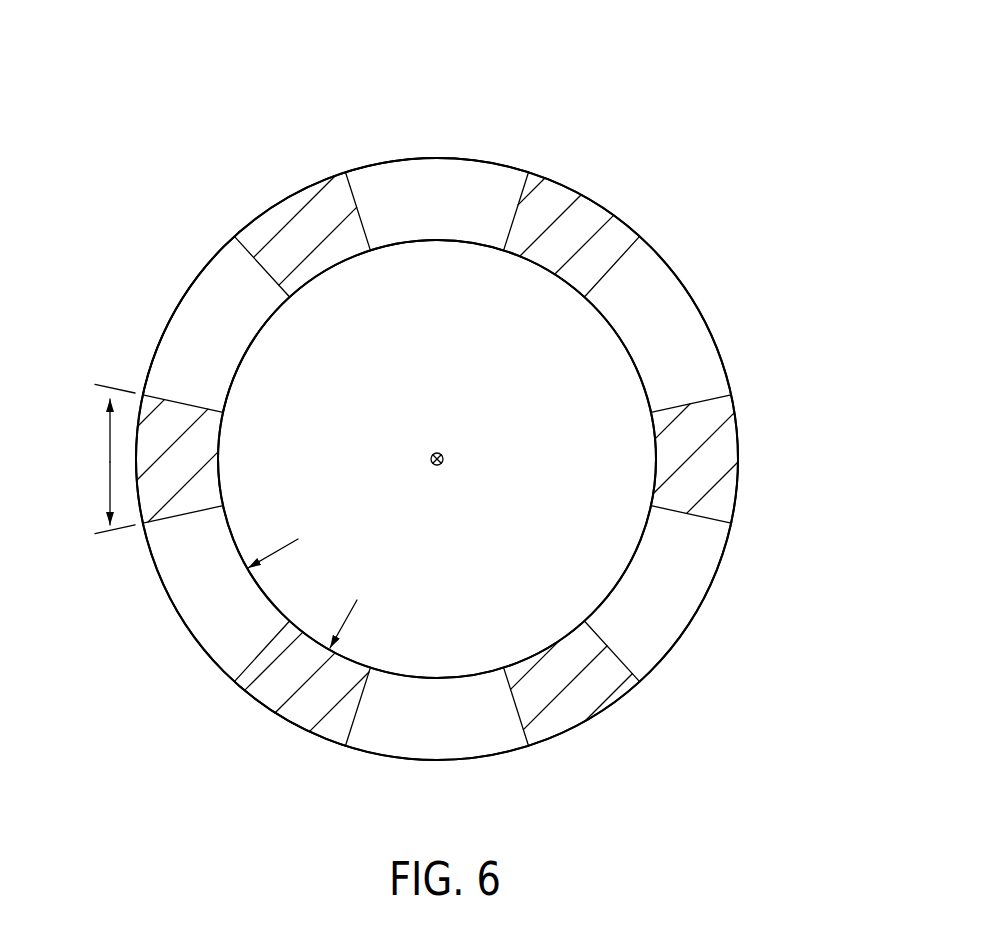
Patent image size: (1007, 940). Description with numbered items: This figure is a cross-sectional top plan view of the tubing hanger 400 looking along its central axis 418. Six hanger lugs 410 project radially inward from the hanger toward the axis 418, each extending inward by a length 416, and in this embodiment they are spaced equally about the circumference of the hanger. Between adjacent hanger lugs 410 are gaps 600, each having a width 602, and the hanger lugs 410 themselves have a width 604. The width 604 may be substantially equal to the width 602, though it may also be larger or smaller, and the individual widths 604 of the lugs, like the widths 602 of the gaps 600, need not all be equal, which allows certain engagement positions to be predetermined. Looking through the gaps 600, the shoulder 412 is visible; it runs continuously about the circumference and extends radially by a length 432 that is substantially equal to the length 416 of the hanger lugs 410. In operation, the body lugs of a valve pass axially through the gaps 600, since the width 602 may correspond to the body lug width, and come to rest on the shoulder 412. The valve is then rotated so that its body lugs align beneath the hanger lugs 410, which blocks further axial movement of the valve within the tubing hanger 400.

The tubing hanger 400 is at (508, 84).
The hanger lugs 410 is at (305, 228).
The shoulder 412 is at (433, 185).
The length 416 is at (285, 720).
The axis 418 is at (443, 452).
The length 432 is at (173, 607).
The gaps 600 is at (254, 361).
The width 602 is at (257, 262).
The width 604 is at (110, 458).